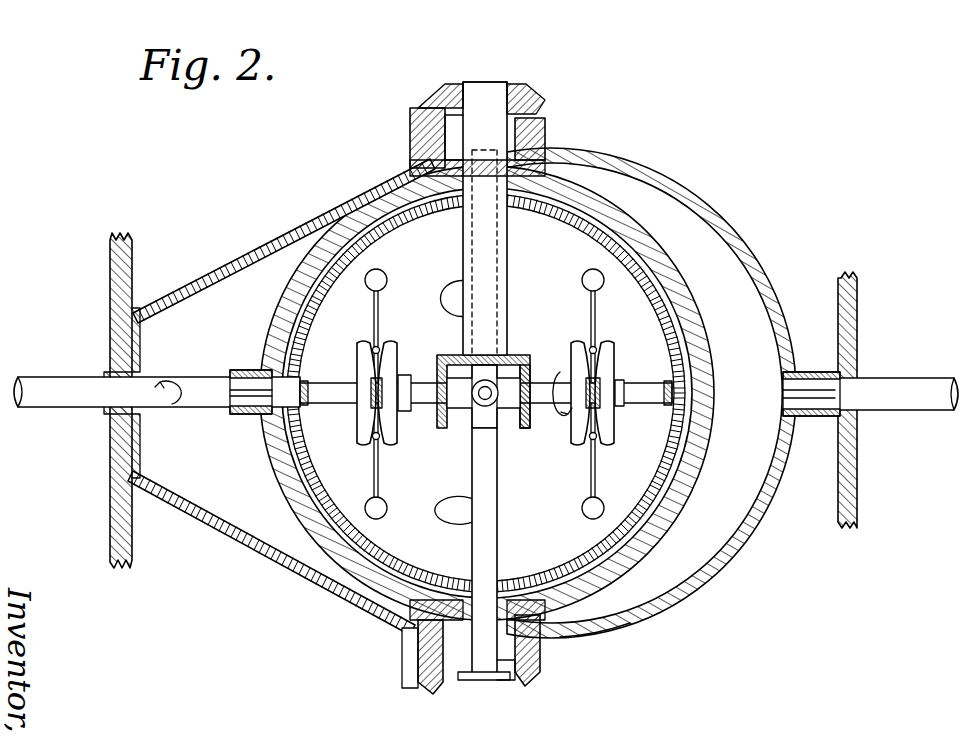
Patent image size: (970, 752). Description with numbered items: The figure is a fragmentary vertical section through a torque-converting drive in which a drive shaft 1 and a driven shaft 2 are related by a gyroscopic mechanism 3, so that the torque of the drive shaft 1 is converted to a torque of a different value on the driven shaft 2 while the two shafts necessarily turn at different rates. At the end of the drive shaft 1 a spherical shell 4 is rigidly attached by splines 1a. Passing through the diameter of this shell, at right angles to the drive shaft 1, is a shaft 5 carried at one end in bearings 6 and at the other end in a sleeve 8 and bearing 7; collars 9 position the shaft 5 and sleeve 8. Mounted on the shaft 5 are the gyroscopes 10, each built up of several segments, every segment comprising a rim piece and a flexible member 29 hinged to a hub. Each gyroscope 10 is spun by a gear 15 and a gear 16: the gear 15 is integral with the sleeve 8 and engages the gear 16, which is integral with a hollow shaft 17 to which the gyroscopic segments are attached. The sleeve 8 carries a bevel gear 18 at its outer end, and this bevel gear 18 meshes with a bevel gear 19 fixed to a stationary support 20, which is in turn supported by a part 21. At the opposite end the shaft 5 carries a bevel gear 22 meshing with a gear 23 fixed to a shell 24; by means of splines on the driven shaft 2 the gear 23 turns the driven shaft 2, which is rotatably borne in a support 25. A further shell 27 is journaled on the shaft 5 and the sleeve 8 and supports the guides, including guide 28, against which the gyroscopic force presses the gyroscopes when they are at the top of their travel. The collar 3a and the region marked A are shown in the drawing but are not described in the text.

The drive shaft 1 is at (44, 392).
The splines 1a is at (248, 372).
The driven shaft 2 is at (906, 398).
The gyroscopic mechanism 3 is at (684, 190).
The collar 3a is at (404, 376).
The spherical shell 4 is at (266, 456).
The shaft 5 is at (492, 487).
The bearings 6 is at (478, 596).
The bearing 7 is at (420, 168).
The sleeve 8 is at (508, 259).
The collars 9 is at (514, 582).
The gyroscopes 10 is at (584, 276).
The gear 15 is at (444, 356).
The gear 16 is at (528, 358).
The hollow shaft 17 is at (424, 408).
The bevel gear 18 is at (449, 82).
The bevel gear 19 is at (432, 104).
The stationary support 20 is at (258, 252).
The part 21 is at (108, 252).
The bevel gear 22 is at (486, 682).
The gear 23 is at (524, 666).
The shell 24 is at (578, 634).
The support 25 is at (858, 302).
The shell 27 is at (405, 222).
The guide 28 is at (582, 442).
The flexible member 29 is at (802, 382).
The chamber A is at (676, 520).